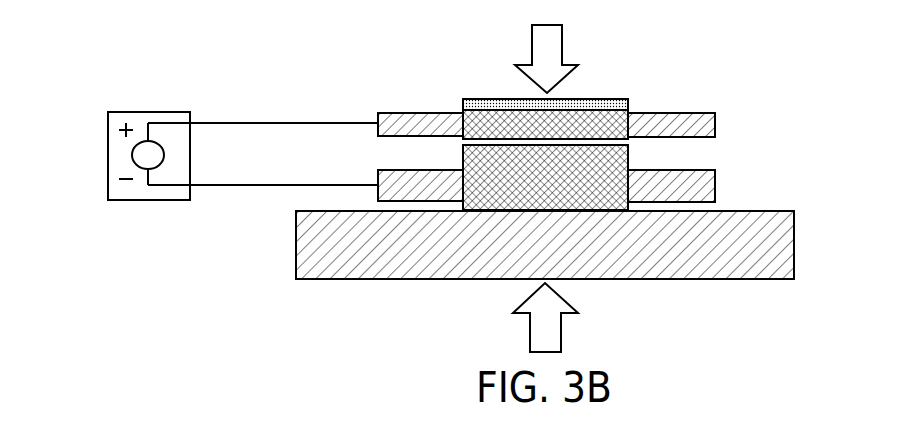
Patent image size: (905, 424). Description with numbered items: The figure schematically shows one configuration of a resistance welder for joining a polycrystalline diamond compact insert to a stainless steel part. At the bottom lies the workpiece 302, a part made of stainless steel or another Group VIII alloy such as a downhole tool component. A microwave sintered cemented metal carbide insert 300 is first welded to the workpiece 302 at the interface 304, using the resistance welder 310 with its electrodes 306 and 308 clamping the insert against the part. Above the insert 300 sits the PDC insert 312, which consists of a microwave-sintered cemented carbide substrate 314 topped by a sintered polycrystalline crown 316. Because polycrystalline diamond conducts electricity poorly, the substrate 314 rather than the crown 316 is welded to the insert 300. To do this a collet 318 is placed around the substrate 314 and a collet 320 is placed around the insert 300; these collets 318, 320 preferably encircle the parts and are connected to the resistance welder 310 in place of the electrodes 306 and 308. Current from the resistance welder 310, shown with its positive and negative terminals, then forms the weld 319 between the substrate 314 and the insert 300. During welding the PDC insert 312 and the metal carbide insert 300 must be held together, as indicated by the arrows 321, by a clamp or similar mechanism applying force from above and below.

The microwave sintered cemented metal carbide insert 300 is at (629, 162).
The workpiece 302 is at (797, 249).
The interface between base and lower layer 304 is at (461, 208).
The electrode 306 is at (404, 122).
The electrode 308 is at (378, 178).
The resistance welder 310 is at (108, 158).
The PDC insert 312 is at (562, 89).
The microwave-sintered cemented carbide substrate 314 is at (483, 122).
The sintered polycrystalline crown 316 is at (602, 98).
The collet 318 is at (717, 121).
The weld 319 is at (461, 142).
The collet 320 is at (717, 188).
The arrows 321 is at (530, 49).